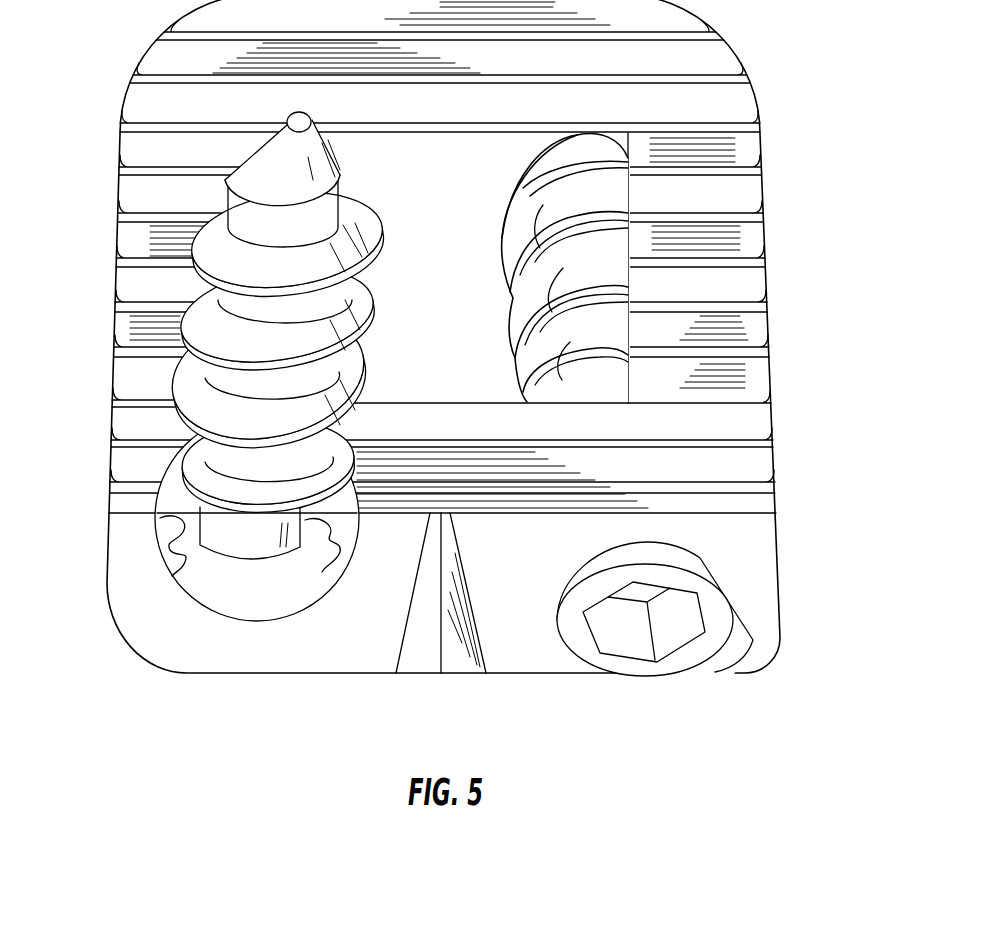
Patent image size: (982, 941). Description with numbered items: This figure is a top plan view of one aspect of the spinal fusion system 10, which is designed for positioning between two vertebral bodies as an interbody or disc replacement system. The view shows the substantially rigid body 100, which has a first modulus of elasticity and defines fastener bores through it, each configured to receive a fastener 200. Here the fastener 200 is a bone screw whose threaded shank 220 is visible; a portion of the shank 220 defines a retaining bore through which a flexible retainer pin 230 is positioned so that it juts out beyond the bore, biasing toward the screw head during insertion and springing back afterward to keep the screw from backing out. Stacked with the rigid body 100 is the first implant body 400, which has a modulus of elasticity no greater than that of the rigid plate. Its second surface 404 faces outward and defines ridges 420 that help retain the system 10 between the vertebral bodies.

The spinal fusion system 10 is at (453, 356).
The substantially rigid body 100 is at (469, 356).
The fastener 200 is at (560, 212).
The threaded shank 220 is at (205, 244).
The flexible retainer pin 230 is at (172, 545).
The first implant body 400 is at (757, 333).
The second surface of the first implant body 404 is at (768, 304).
The ridges 420 is at (740, 107).